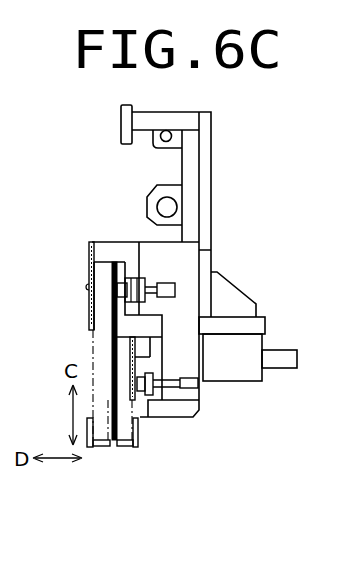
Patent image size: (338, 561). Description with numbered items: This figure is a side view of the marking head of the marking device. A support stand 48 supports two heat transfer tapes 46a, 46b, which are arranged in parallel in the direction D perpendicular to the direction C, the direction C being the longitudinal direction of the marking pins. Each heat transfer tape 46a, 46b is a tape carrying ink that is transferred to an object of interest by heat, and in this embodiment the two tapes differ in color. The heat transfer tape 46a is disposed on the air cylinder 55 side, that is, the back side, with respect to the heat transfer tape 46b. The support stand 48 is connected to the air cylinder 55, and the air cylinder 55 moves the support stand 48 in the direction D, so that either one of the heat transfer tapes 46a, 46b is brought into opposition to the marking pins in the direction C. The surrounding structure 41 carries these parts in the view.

The bracket 41 is at (232, 173).
The support stand 48 is at (187, 298).
The air cylinder 55 is at (241, 382).
The heat transfer tape 46a is at (125, 446).
The heat transfer tape 46b is at (105, 446).